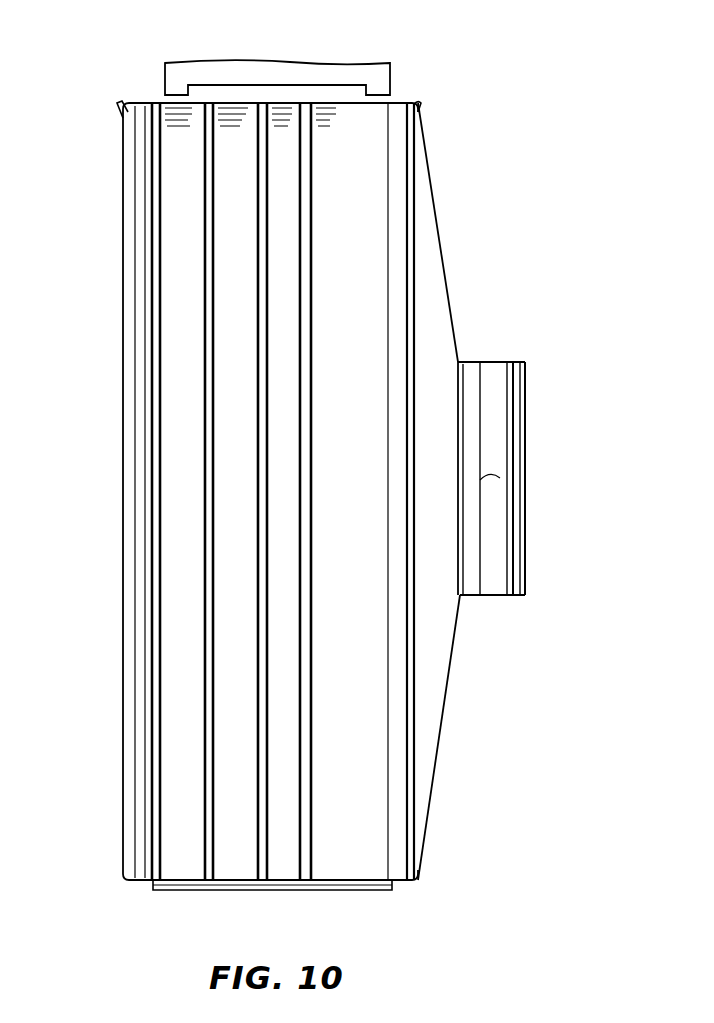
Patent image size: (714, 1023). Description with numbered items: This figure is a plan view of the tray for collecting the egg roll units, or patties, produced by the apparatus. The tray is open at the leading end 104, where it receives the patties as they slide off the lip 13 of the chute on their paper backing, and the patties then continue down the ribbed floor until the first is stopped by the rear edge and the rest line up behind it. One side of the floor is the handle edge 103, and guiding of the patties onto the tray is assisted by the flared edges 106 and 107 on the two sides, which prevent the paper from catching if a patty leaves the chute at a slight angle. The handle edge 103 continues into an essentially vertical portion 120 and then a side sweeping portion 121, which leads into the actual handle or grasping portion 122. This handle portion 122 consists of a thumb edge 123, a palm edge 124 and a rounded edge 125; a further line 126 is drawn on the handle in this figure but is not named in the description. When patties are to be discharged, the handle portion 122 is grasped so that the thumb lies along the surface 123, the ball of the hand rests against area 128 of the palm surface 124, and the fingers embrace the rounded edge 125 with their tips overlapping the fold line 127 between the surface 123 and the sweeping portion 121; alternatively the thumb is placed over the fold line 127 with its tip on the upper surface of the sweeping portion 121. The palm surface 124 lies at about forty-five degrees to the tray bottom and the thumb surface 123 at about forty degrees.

The lip 13 is at (310, 84).
The handle edge 103 is at (397, 170).
The leading end 104 is at (395, 102).
The flared edge 106 is at (122, 118).
The flared edge 107 is at (412, 108).
The vertical portion 120 is at (412, 193).
The side sweeping portion 121 is at (420, 256).
The handle portion 122 is at (550, 198).
The thumb edge 123 is at (472, 374).
The palm edge 124 is at (495, 373).
The rounded edge 125 is at (527, 389).
The rib 126 is at (483, 473).
The fold line 127 is at (462, 597).
The area of palm surface 128 is at (492, 568).